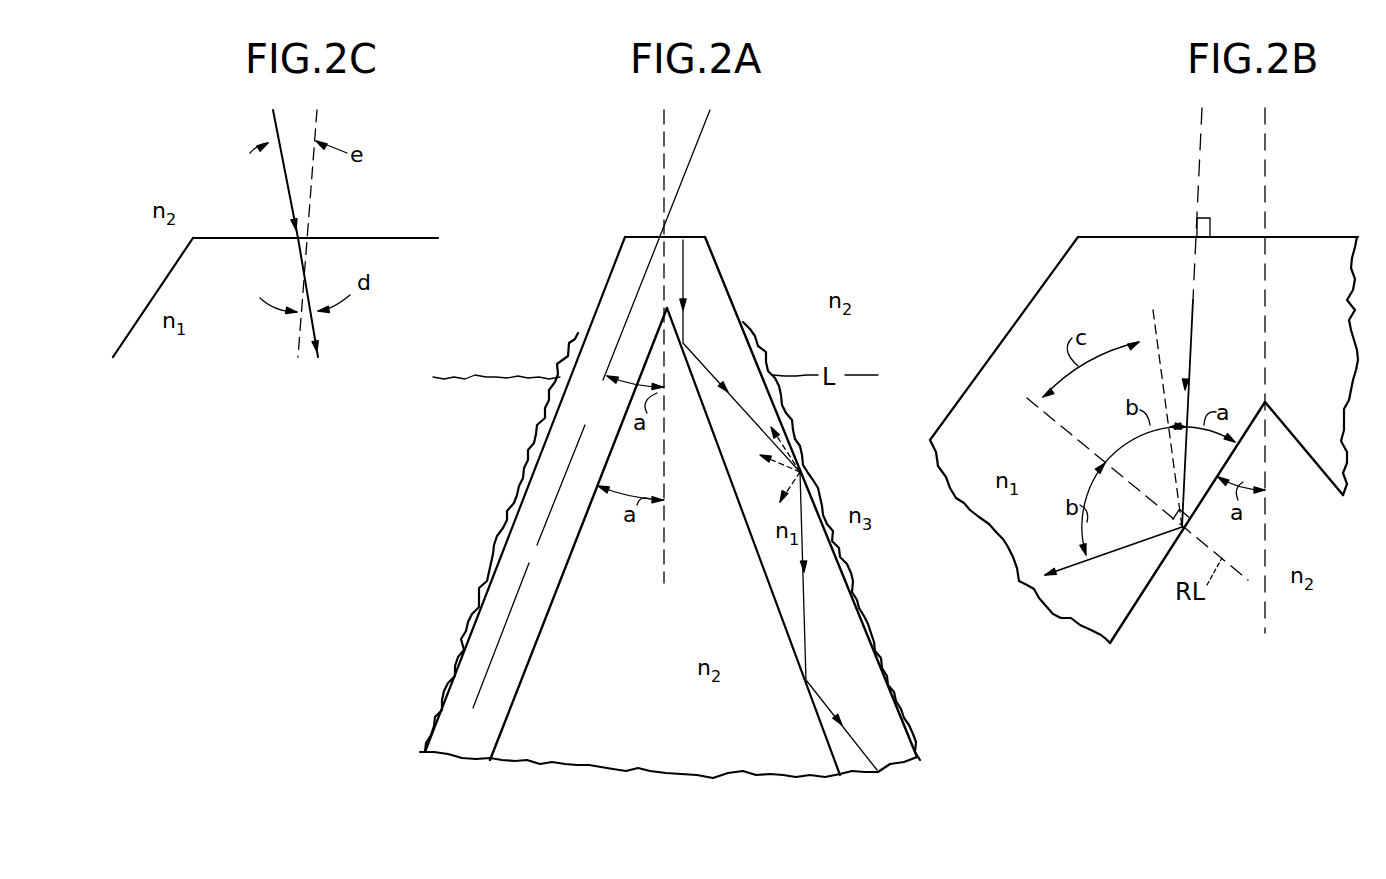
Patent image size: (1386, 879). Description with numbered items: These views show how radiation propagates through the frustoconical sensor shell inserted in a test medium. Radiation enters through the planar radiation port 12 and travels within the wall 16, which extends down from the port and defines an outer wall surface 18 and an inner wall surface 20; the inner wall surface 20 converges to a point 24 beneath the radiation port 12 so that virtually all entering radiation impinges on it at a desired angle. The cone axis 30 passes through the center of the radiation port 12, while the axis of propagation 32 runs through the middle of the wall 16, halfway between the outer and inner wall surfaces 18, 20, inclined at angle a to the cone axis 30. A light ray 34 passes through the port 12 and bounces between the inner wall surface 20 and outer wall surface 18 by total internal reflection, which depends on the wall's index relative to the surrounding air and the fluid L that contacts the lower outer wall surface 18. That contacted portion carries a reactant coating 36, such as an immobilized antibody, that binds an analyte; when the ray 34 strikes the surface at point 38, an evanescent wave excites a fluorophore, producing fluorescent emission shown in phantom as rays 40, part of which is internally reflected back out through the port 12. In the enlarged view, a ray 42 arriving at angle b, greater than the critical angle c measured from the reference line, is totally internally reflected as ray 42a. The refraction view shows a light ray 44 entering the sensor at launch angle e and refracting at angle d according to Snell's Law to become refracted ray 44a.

In FIG. 2A, the radiation port 12 is at (684, 236).
In FIG. 2B, the radiation port 12 is at (1298, 237).
In FIG. 2C, the radiation port 12 is at (342, 238).
In FIG. 2A, the wall 16 is at (523, 648).
In FIG. 2A, the outer wall surface 18 is at (430, 712).
In FIG. 2A, the inner wall surface 20 is at (520, 712).
In FIG. 2A, the point 24 is at (670, 348).
In FIG. 2B, the point 24 is at (1276, 428).
In FIG. 2A, the cone axis 30 is at (668, 542).
In FIG. 2B, the cone axis 30 is at (1266, 196).
In FIG. 2A, the axis of propagation 32 is at (694, 154).
In FIG. 2A, the light ray 34 is at (686, 336).
In FIG. 2A, the reactant coating 36 is at (462, 628).
In FIG. 2A, the point 38 is at (804, 470).
In FIG. 2A, the rays 40 is at (771, 467).
In FIG. 2B, the ray 42 is at (1190, 366).
In FIG. 2B, the ray 42a is at (1072, 568).
In FIG. 2C, the light ray 44 is at (287, 185).
In FIG. 2C, the refracted ray 44a is at (319, 324).